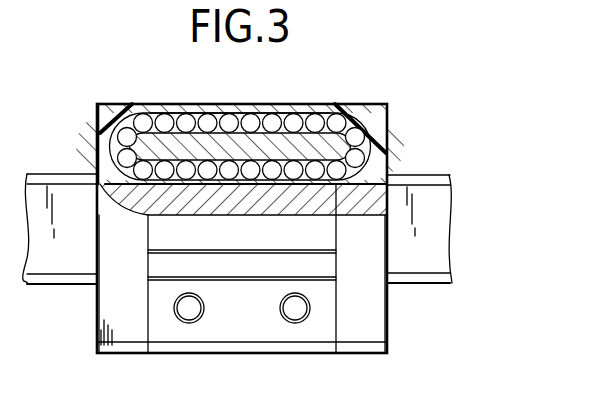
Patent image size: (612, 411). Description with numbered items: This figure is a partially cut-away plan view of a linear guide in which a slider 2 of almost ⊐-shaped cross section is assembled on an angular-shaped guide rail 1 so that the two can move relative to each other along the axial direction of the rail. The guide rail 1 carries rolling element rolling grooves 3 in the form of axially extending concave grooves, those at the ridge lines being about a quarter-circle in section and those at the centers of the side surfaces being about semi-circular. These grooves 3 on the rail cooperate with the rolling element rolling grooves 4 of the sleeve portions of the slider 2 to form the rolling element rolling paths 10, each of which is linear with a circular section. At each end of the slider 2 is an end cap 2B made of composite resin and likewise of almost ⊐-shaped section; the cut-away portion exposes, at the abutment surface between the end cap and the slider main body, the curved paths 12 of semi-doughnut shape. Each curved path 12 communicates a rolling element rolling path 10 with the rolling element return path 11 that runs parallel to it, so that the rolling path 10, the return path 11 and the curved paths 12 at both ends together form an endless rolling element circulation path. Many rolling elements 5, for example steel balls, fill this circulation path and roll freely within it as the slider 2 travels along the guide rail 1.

The guide rail 1 is at (433, 225).
The slider 2 is at (255, 331).
The end cap 2B is at (125, 330).
The rolling element rolling groove 3 is at (56, 175).
The rolling element rolling groove 4 is at (300, 104).
The rolling element 5 is at (225, 114).
The rolling element rolling path 10 is at (297, 166).
The rolling element return path 11 is at (173, 104).
The curved path 12 is at (131, 104).